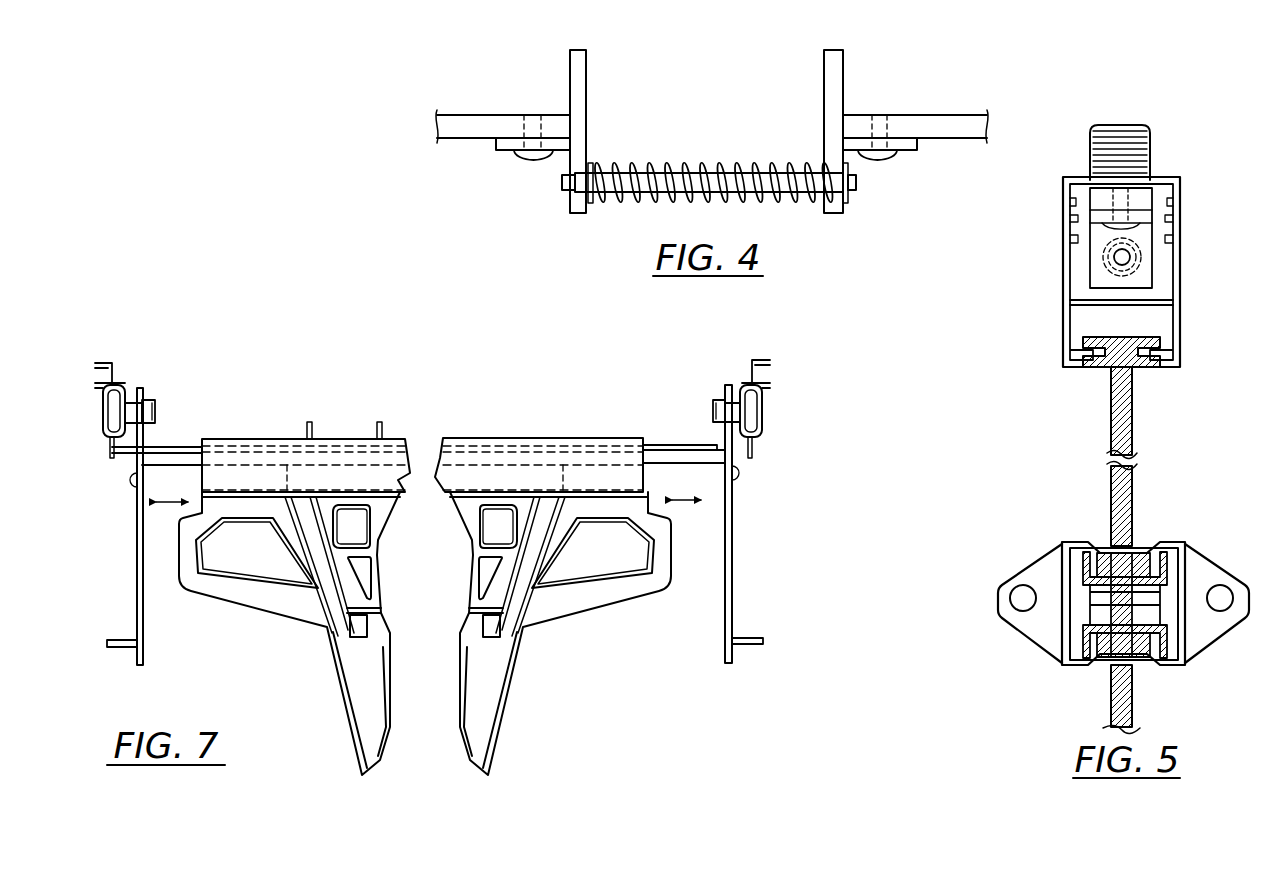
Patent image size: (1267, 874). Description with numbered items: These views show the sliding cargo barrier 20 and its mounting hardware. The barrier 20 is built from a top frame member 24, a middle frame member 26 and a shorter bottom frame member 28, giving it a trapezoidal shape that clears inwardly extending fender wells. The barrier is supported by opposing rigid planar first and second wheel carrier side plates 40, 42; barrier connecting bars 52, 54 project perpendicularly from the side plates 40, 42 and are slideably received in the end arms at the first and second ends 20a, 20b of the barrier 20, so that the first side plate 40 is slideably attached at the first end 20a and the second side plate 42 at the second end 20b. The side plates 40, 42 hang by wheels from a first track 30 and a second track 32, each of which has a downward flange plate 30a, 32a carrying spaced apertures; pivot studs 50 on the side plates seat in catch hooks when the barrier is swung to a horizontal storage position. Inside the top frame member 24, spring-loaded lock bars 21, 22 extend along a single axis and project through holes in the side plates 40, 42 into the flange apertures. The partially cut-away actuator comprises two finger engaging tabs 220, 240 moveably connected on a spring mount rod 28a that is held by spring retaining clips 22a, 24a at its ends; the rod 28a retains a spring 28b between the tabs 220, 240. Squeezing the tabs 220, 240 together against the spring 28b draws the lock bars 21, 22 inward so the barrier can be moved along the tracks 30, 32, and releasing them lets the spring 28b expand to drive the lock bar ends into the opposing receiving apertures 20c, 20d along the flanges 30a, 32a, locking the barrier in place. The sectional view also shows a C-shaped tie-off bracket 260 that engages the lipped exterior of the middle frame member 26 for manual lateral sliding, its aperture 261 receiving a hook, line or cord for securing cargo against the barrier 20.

In FIG. 7, the cargo barrier 20 is at (425, 633).
In FIG. 7, the first end of cargo barrier 20a is at (214, 546).
In FIG. 7, the second end of cargo barrier 20b is at (627, 507).
In FIG. 7, the receiving aperture 20c is at (110, 449).
In FIG. 7, the receiving aperture 20d is at (753, 453).
In FIG. 4, the lock bar 21 is at (945, 125).
In FIG. 4, the lock bar 22 is at (458, 128).
In FIG. 7, the lock bar 22 is at (170, 447).
In FIG. 4, the spring retaining clip 22a is at (562, 183).
In FIG. 5, the top frame member 24 is at (1173, 300).
In FIG. 7, the top frame member 24 is at (680, 445).
In FIG. 4, the spring retaining clip 24a is at (849, 197).
In FIG. 5, the middle frame member 26 is at (1075, 553).
In FIG. 5, the bottom frame member 28 is at (1124, 497).
In FIG. 4, the spring mount rod 28a is at (627, 197).
In FIG. 4, the spring 28b is at (665, 173).
In FIG. 7, the first track 30 is at (118, 383).
In FIG. 7, the flange plate 30a is at (117, 462).
In FIG. 7, the second track 32 is at (750, 383).
In FIG. 7, the flange plate 32a is at (753, 458).
In FIG. 7, the first wheel carrier side plate 40 is at (141, 612).
In FIG. 7, the second wheel carrier side plate 42 is at (733, 568).
In FIG. 7, the pivot stud 50 is at (125, 647).
In FIG. 7, the barrier connecting bar 52 is at (158, 477).
In FIG. 7, the barrier connecting bar 54 is at (710, 477).
In FIG. 4, the finger engaging tab 220 is at (587, 80).
In FIG. 7, the finger engaging tab 220 is at (308, 422).
In FIG. 4, the finger engaging tab 240 is at (824, 83).
In FIG. 5, the finger engaging tab 240 is at (1122, 135).
In FIG. 7, the finger engaging tab 240 is at (380, 422).
In FIG. 5, the tie-off bracket 260 is at (1048, 630).
In FIG. 5, the aperture 261 is at (1010, 583).